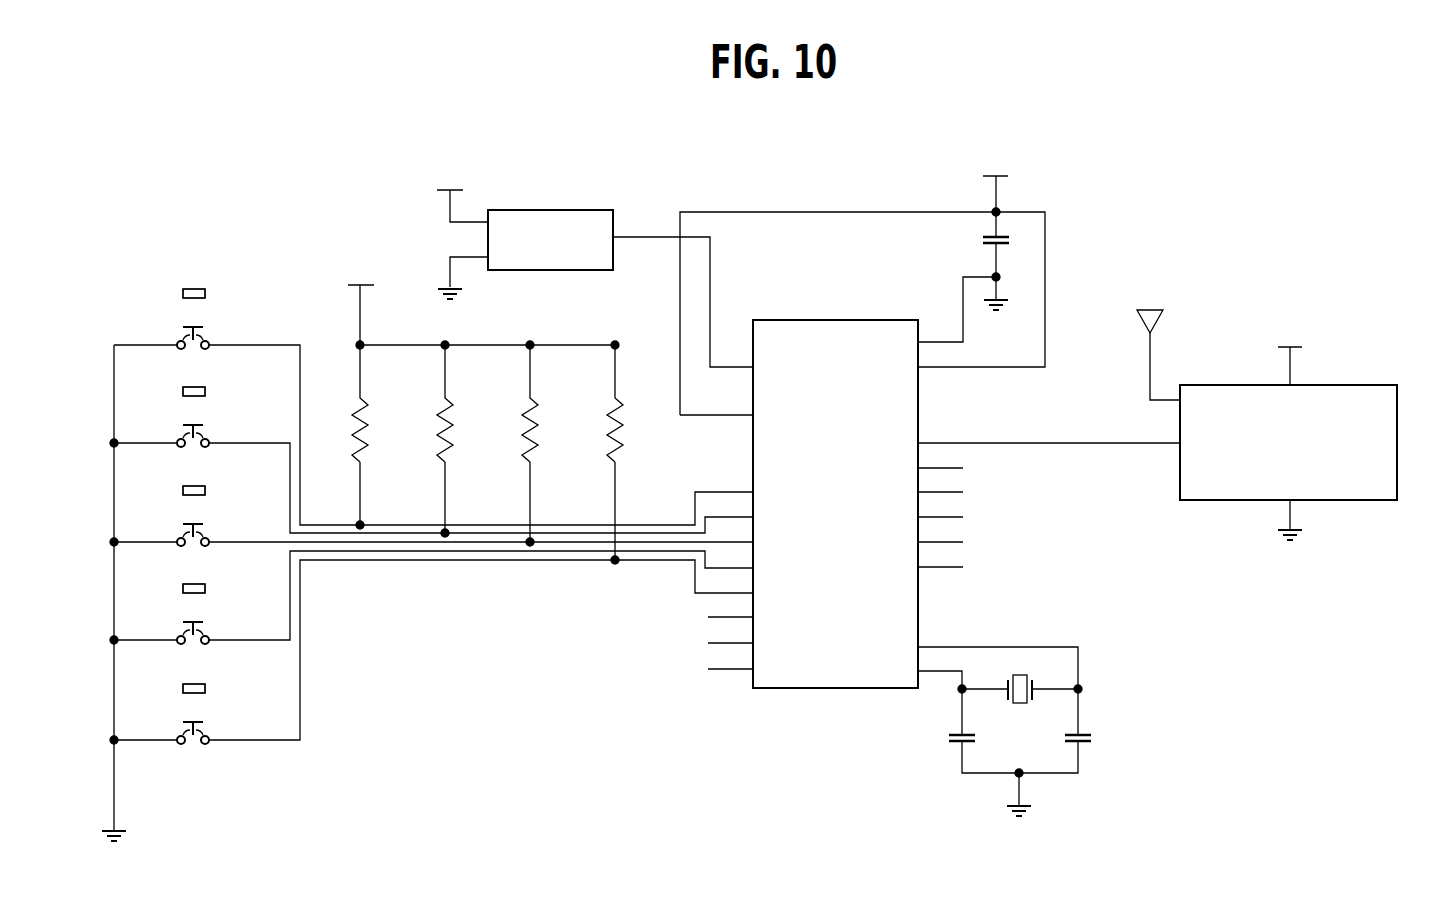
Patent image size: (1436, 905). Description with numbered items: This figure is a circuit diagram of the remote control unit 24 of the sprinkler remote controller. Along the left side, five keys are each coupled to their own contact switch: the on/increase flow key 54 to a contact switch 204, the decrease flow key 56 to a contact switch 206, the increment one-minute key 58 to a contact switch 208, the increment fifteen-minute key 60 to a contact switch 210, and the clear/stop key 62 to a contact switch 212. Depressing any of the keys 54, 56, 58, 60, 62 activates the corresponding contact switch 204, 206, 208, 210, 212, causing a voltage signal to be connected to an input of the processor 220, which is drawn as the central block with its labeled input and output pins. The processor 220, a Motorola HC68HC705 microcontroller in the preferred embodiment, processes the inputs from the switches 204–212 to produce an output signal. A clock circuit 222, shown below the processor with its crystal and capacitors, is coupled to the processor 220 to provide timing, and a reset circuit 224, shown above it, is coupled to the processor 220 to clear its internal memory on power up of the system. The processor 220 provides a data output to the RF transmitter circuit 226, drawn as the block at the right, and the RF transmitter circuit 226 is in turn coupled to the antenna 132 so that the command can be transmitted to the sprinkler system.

The remote control unit 24 is at (569, 172).
The reset circuit 224 is at (598, 210).
The processor 220 is at (753, 681).
The clock circuit 222 is at (980, 780).
The RF transmitter circuit 226 is at (1180, 478).
The antenna 132 is at (1150, 355).
The on/increase flow key 54 is at (183, 292).
The decrease flow key 56 is at (183, 390).
The increment one-minute key 58 is at (183, 489).
The increment fifteen-minute key 60 is at (183, 587).
The clear/stop key 62 is at (183, 687).
The contact switch 204 is at (205, 340).
The contact switch 206 is at (205, 438).
The contact switch 208 is at (205, 537).
The contact switch 210 is at (205, 635).
The contact switch 212 is at (205, 735).